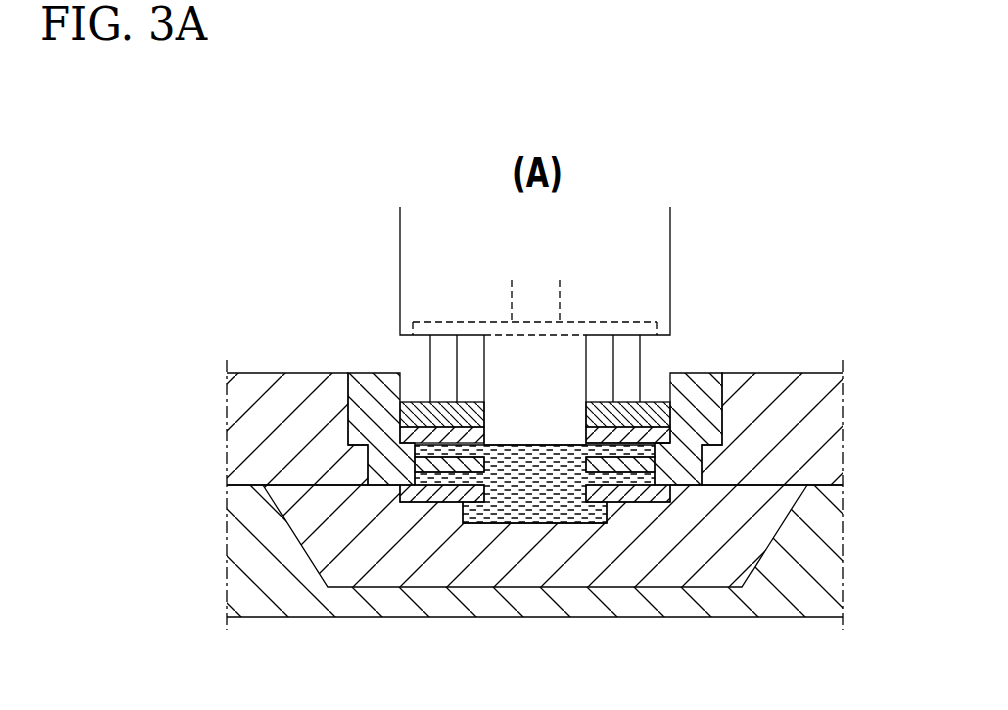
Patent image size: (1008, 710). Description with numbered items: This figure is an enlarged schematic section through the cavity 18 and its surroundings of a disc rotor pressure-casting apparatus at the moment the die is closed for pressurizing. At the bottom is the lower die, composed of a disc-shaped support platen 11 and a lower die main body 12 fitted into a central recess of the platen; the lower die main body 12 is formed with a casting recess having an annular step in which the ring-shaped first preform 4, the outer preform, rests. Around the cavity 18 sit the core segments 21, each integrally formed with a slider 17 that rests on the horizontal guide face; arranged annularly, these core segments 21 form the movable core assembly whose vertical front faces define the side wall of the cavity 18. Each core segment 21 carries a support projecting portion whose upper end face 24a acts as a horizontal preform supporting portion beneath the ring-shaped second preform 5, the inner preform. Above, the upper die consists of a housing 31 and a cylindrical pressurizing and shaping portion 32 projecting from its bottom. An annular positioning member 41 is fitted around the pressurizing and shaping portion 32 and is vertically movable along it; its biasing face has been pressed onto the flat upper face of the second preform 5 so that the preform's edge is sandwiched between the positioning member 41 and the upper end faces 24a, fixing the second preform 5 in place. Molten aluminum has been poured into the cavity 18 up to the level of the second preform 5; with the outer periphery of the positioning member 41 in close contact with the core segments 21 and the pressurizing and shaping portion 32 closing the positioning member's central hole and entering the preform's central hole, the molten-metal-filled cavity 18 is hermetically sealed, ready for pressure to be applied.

The housing 31 is at (670, 228).
The positioning member 41 is at (422, 408).
The upper end face of the support projecting portion 24a is at (407, 430).
The second preform 5 is at (643, 430).
The pressurizing and shaping portion 32 is at (555, 424).
The core segment 21 is at (377, 373).
The slider 17 is at (282, 373).
The support platen 11 is at (307, 620).
The lower die main body 12 is at (432, 567).
The first preform 4 is at (622, 492).
The cavity 18 is at (530, 505).